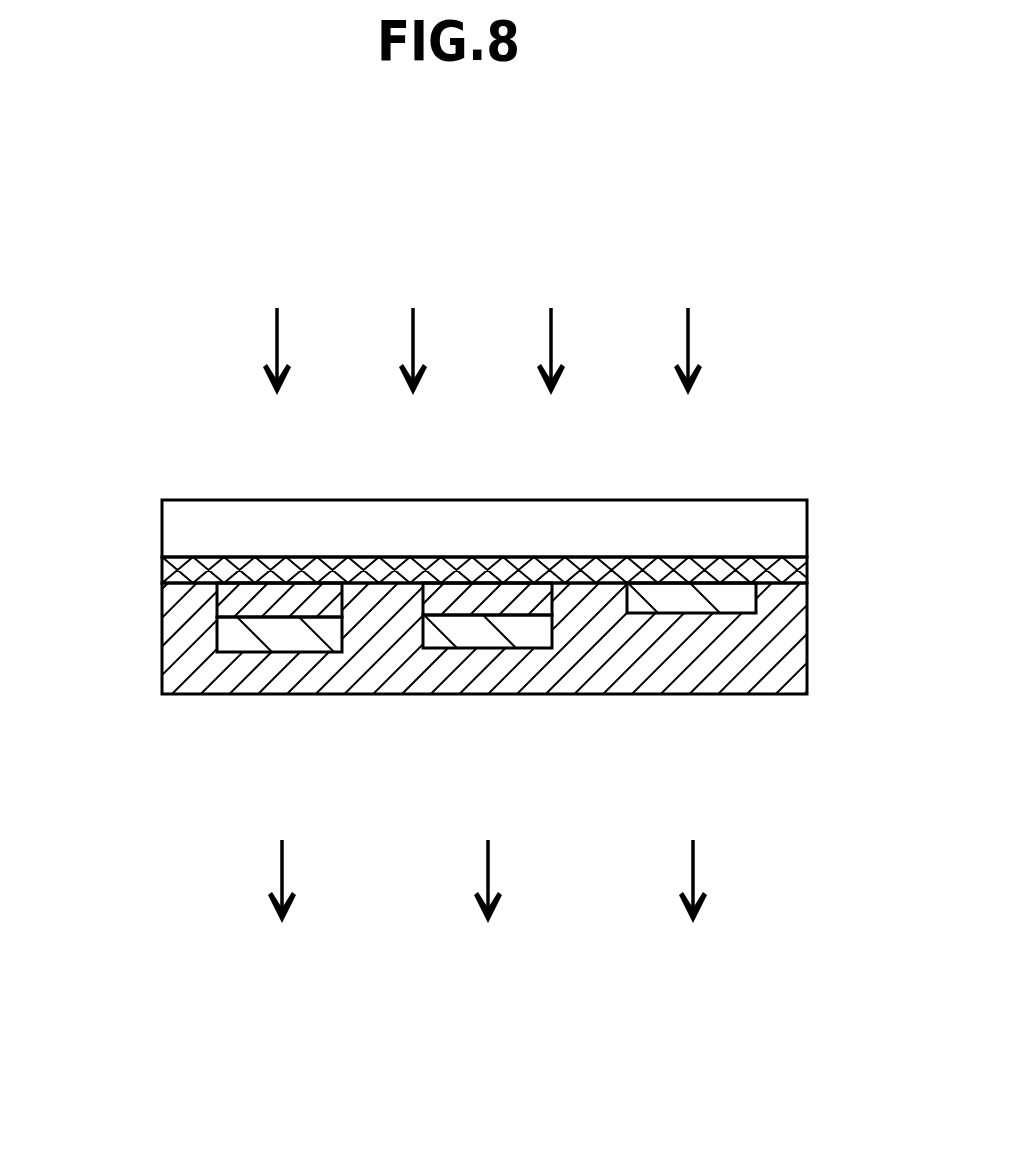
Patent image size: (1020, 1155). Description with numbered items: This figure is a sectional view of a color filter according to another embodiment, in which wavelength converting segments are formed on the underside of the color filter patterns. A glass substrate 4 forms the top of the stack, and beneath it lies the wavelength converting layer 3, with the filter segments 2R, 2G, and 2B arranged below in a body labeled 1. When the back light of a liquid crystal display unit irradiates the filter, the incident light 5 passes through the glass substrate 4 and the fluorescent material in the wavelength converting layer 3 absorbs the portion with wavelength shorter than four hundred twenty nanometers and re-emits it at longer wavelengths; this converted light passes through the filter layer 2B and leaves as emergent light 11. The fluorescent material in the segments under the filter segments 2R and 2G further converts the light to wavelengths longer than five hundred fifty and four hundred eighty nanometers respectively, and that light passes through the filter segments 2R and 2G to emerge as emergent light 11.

The substrate 1 is at (777, 665).
The green filter segment 2G is at (282, 640).
The red filter segment 2R is at (480, 640).
The blue filter segment 2B is at (712, 590).
The wavelength converting layer 3 is at (623, 565).
The glass substrate 4 is at (210, 538).
The incident light 5 is at (482, 317).
The emergent light 11 is at (487, 921).